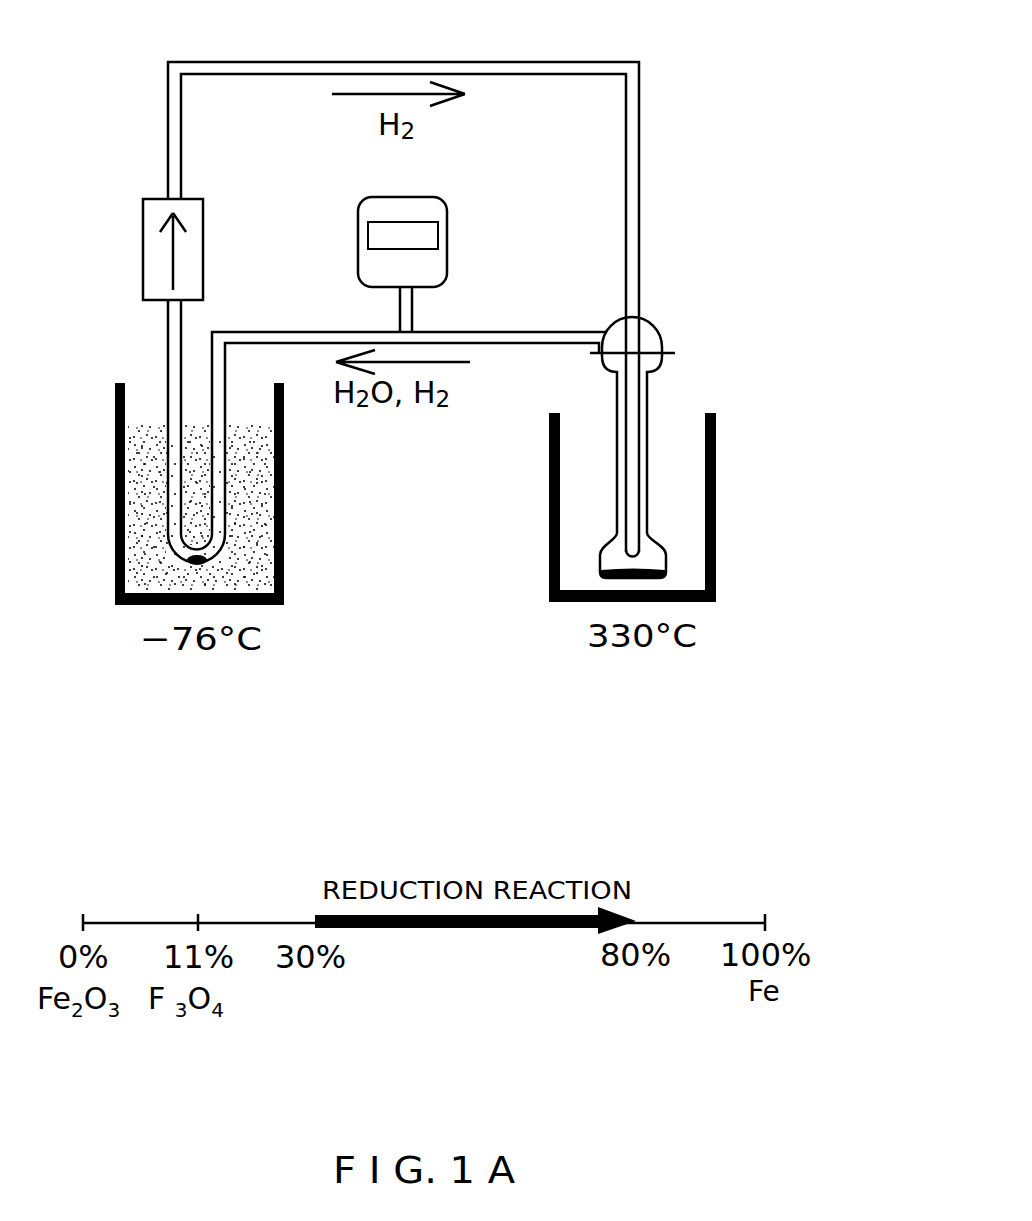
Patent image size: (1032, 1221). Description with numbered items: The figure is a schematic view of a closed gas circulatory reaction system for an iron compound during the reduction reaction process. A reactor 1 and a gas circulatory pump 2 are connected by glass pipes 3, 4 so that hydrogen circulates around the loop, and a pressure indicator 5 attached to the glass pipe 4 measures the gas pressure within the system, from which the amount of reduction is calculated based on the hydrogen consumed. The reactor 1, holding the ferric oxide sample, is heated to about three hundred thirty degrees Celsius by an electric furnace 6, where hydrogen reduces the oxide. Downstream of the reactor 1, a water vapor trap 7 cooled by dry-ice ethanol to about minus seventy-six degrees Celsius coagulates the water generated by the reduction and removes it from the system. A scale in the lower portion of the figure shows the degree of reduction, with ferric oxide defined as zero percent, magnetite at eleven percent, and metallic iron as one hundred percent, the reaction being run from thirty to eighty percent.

The reactor 1 is at (667, 552).
The gas circulatory pump 2 is at (143, 219).
The glass pipe 3 is at (403, 62).
The glass pipe 4 is at (526, 332).
The pressure indicator 5 is at (447, 221).
The electric furnace 6 is at (549, 468).
The water vapor trap 7 is at (115, 463).